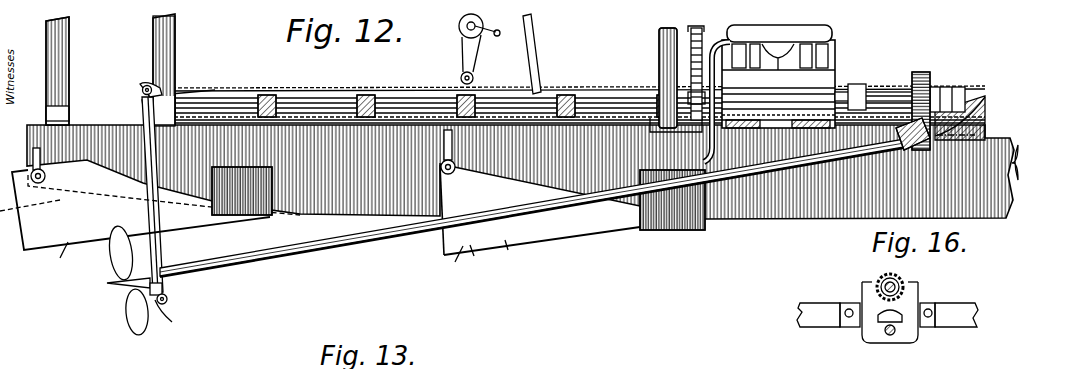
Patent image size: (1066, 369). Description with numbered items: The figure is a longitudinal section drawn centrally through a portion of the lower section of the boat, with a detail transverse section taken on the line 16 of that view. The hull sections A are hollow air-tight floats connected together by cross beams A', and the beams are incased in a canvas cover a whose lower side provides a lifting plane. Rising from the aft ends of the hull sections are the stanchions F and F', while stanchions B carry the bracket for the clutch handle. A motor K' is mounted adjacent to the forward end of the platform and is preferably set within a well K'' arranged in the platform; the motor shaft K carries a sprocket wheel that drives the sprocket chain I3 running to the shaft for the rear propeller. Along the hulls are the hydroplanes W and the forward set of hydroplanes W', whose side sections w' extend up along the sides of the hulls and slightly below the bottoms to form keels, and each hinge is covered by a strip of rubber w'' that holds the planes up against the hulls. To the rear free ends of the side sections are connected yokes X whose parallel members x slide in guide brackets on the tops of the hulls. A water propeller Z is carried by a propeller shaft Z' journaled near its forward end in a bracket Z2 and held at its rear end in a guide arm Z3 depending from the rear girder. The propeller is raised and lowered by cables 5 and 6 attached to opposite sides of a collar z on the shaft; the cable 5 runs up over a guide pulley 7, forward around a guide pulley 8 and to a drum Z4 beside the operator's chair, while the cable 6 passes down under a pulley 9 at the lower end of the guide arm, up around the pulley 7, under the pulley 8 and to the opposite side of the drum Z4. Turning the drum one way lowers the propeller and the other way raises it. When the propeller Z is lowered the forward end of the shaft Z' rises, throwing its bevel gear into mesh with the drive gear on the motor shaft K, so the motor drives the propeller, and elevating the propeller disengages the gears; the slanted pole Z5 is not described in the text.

In FIG. 12, the cable 5 is at (212, 88).
In FIG. 12, the cable 6 is at (165, 289).
In FIG. 12, the guide pulley 7 is at (145, 85).
In FIG. 12, the guide pulley 8 is at (474, 79).
In FIG. 12, the pulley 9 is at (168, 302).
In FIG. 12, the section line 16 is at (893, 92).
In FIG. 12, the canvas cover a is at (318, 88).
In FIG. 12, the hull sections A is at (520, 186).
In FIG. 12, the cross beams A' is at (516, 95).
In FIG. 16, the cross beams A' is at (880, 328).
In FIG. 12, the stanchions B is at (678, 28).
In FIG. 12, the stanchions F is at (70, 71).
In FIG. 12, the stanchions F' is at (179, 70).
In FIG. 12, the sprocket chain I3 is at (688, 43).
In FIG. 12, the motor shaft K is at (660, 80).
In FIG. 16, the motor shaft K is at (855, 278).
In FIG. 12, the motor K' is at (769, 93).
In FIG. 12, the well K'' is at (900, 103).
In FIG. 12, the hydroplanes W is at (150, 210).
In FIG. 12, the side sections w' is at (257, 258).
In FIG. 12, the forward set of hydroplanes W' is at (540, 216).
In FIG. 12, the strip of rubber w'' is at (458, 209).
In FIG. 12, the yokes X is at (31, 154).
In FIG. 12, the parallel members x is at (458, 160).
In FIG. 12, the water propeller Z is at (114, 280).
In FIG. 12, the collar z is at (184, 334).
In FIG. 12, the propeller shaft Z' is at (602, 207).
In FIG. 16, the propeller shaft Z' is at (921, 297).
In FIG. 12, the bracket Z2 is at (924, 74).
In FIG. 16, the bracket Z2 is at (903, 280).
In FIG. 12, the guide arm Z3 is at (161, 249).
In FIG. 12, the drum Z4 is at (460, 26).
In FIG. 12, the pole Z5 is at (519, 54).